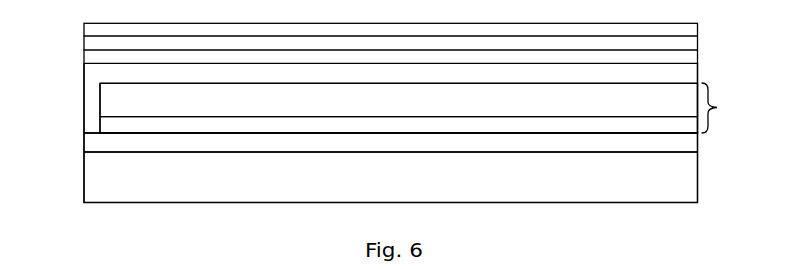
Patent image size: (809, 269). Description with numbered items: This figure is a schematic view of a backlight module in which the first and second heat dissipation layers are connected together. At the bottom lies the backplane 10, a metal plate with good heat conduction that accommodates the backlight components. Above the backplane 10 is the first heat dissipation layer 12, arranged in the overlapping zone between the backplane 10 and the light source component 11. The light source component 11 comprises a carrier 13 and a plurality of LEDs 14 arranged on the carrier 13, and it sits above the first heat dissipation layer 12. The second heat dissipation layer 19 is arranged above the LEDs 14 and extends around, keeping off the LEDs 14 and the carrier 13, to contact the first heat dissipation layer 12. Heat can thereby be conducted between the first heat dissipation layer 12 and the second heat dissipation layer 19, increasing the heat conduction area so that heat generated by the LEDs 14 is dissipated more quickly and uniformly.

The backplane 10 is at (107, 190).
The light source component 11 is at (426, 108).
The first heat dissipation layer 12 is at (107, 146).
The carrier 13 is at (115, 125).
The LEDs 14 is at (118, 106).
The second heat dissipation layer 19 is at (117, 76).